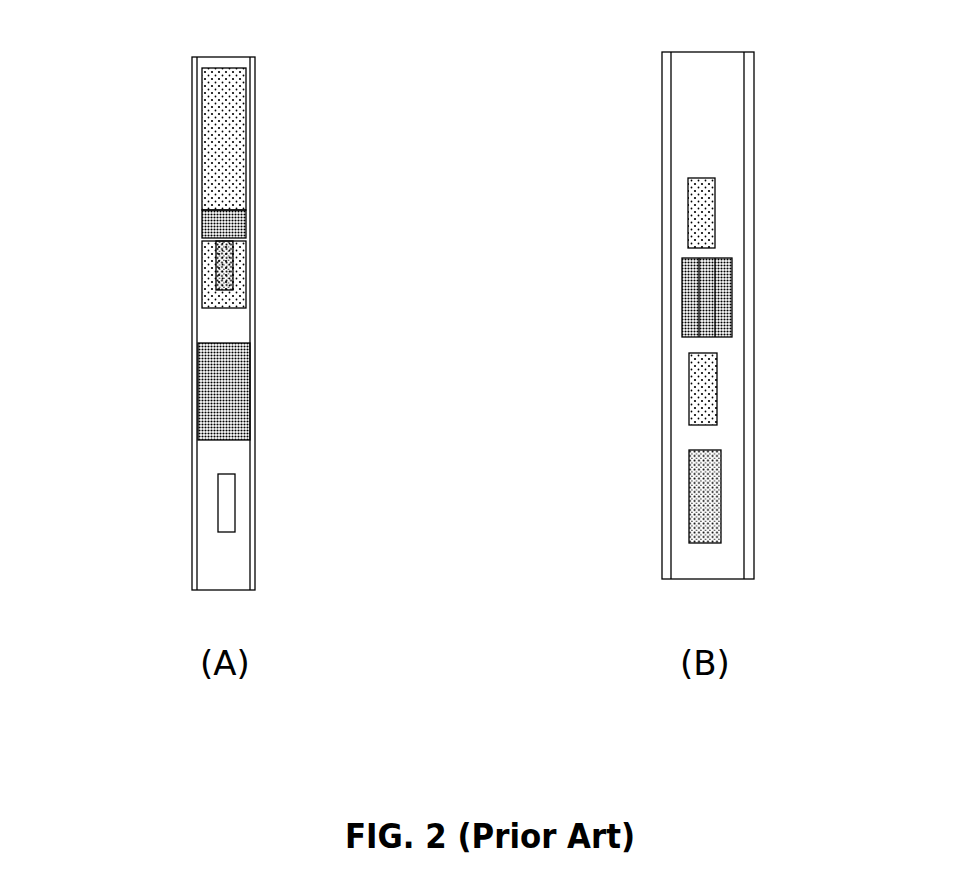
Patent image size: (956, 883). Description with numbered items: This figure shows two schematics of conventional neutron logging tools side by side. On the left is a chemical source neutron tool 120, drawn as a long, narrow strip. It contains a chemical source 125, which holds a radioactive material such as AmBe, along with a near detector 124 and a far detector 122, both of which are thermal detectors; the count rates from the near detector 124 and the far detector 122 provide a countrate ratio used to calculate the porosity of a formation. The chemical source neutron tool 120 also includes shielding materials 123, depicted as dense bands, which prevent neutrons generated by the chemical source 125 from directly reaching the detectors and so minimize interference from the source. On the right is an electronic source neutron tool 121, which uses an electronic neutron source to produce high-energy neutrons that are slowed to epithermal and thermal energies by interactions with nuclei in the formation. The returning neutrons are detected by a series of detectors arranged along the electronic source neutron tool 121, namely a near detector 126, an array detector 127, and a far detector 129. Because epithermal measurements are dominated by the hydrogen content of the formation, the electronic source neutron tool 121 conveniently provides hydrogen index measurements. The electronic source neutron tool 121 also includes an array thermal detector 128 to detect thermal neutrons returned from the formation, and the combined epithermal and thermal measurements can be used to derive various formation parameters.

The chemical source neutron tool 120 is at (155, 86).
The electronic source neutron tool 121 is at (626, 69).
The far detector 122 is at (241, 120).
The shielding materials 123 is at (247, 221).
The near detector 124 is at (245, 298).
The chemical source 125 is at (238, 508).
The near detector 126 is at (700, 203).
The array detector 127 is at (690, 294).
The array thermal detector 128 is at (706, 395).
The far detector 129 is at (705, 481).